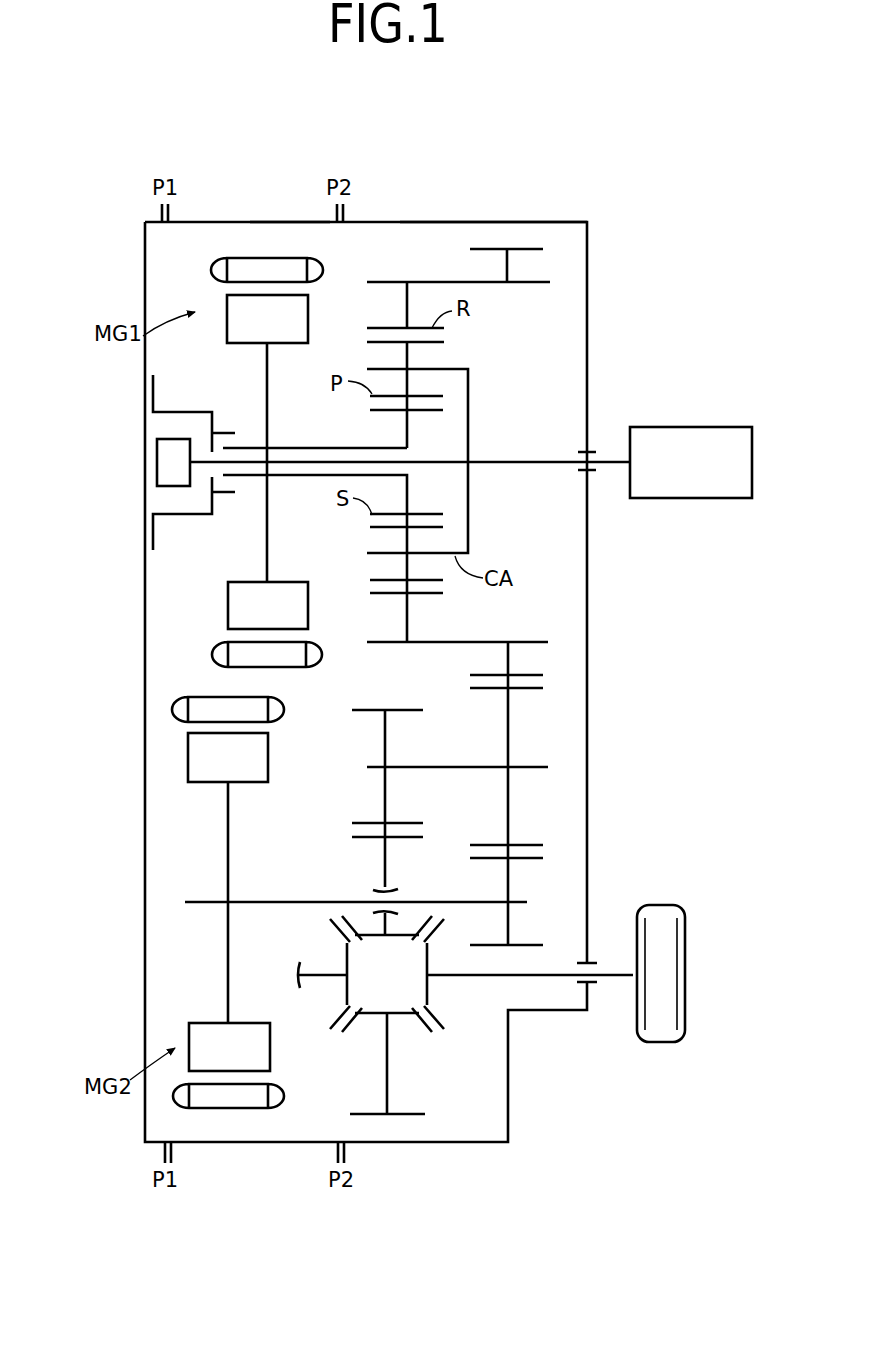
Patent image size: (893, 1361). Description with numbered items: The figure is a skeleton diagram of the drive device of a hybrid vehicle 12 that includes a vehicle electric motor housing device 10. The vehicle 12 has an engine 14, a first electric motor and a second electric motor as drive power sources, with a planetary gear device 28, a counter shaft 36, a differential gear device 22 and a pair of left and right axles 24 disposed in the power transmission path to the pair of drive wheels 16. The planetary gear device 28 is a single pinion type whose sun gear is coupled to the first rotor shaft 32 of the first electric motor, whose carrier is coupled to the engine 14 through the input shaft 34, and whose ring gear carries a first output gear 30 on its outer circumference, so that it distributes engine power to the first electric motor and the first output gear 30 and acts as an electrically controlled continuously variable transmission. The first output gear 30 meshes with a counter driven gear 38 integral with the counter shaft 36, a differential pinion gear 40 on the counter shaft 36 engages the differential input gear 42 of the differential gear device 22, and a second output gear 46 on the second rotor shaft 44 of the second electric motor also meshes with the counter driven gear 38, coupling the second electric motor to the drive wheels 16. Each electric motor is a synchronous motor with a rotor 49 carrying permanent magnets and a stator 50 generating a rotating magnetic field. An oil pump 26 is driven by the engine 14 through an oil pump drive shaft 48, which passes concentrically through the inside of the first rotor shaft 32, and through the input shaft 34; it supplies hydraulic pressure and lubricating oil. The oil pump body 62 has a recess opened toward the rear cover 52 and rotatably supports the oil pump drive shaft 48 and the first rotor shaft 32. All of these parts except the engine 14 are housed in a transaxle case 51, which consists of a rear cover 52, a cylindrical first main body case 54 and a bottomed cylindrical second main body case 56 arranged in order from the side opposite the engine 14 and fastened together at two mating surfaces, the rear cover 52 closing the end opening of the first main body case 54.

The vehicle electric motor housing device 10 is at (107, 384).
The hybrid vehicle 12 is at (632, 76).
The engine 14 is at (733, 440).
The drive wheels 16 is at (663, 920).
The differential gear device 22 is at (456, 1040).
The axles 24 is at (613, 977).
The oil pump 26 is at (172, 452).
The planetary gear device 28 is at (418, 255).
The first output gear 30 is at (520, 252).
The first rotor shaft 32 is at (262, 445).
The input shaft 34 is at (508, 460).
The counter shaft 36 is at (530, 766).
The counter driven gear 38 is at (527, 845).
The differential pinion gear 40 is at (367, 715).
The differential input gear 42 is at (410, 1113).
The second rotor shaft 44 is at (200, 902).
The second output gear 46 is at (530, 945).
The oil pump drive shaft 48 is at (218, 478).
The rotor 49 is at (238, 590).
The stator 50 is at (287, 655).
The transaxle case 51 is at (117, 146).
The rear cover 52 is at (145, 268).
The first main body case 54 is at (253, 222).
The second main body case 56 is at (508, 222).
The oil pump body 62 is at (153, 400).